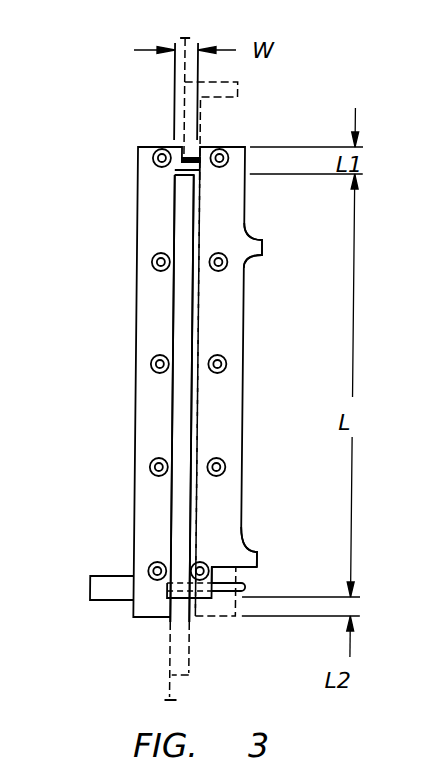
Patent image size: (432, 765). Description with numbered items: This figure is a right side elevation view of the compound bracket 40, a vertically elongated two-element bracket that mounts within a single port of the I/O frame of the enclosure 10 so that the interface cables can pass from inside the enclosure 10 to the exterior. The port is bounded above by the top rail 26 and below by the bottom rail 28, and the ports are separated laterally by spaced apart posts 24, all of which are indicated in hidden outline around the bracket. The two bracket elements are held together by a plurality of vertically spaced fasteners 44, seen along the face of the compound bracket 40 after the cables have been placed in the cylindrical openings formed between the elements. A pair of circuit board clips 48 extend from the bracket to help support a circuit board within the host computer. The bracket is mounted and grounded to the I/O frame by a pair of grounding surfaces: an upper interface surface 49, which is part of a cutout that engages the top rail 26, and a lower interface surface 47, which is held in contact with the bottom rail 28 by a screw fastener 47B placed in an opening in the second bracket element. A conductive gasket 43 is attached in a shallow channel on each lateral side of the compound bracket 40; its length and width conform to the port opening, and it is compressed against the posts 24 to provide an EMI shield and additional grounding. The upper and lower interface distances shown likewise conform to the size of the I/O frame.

The enclosure 10 is at (180, 66).
The top rail 26 is at (238, 88).
The bottom rail 28 is at (194, 657).
The compound bracket 40 is at (138, 332).
The conductive gasket 43 is at (196, 408).
The fasteners 44 is at (224, 356).
The lower interface surface 47 is at (252, 587).
The screw fastener 47B is at (124, 576).
The circuit board clips 48 is at (263, 247).
The upper interface surface 49 is at (186, 158).
The posts 24 is at (201, 457).